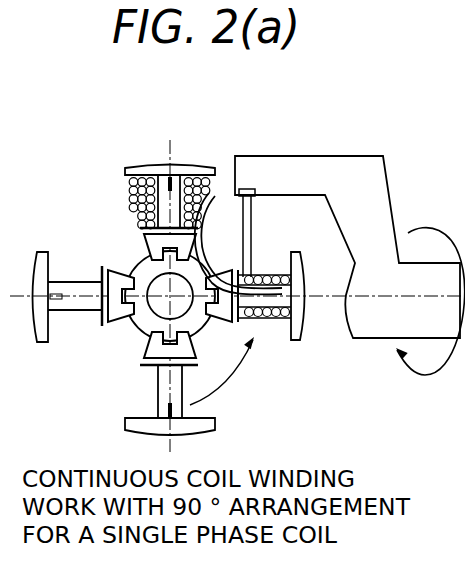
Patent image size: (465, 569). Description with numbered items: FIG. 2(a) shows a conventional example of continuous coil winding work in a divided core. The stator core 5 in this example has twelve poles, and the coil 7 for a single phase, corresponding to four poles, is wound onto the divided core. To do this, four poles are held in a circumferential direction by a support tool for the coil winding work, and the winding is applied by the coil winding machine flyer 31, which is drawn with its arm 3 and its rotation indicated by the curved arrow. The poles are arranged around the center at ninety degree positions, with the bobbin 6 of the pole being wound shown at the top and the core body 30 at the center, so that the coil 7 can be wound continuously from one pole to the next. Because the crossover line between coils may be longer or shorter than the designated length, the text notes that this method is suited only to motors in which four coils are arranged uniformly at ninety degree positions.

The nozzle arm 3 is at (321, 170).
The stator core 5 is at (149, 166).
The bobbin 6 is at (140, 228).
The coil 7 is at (135, 190).
The stator core 30 is at (140, 327).
The coil winding machine flyer 31 is at (395, 203).